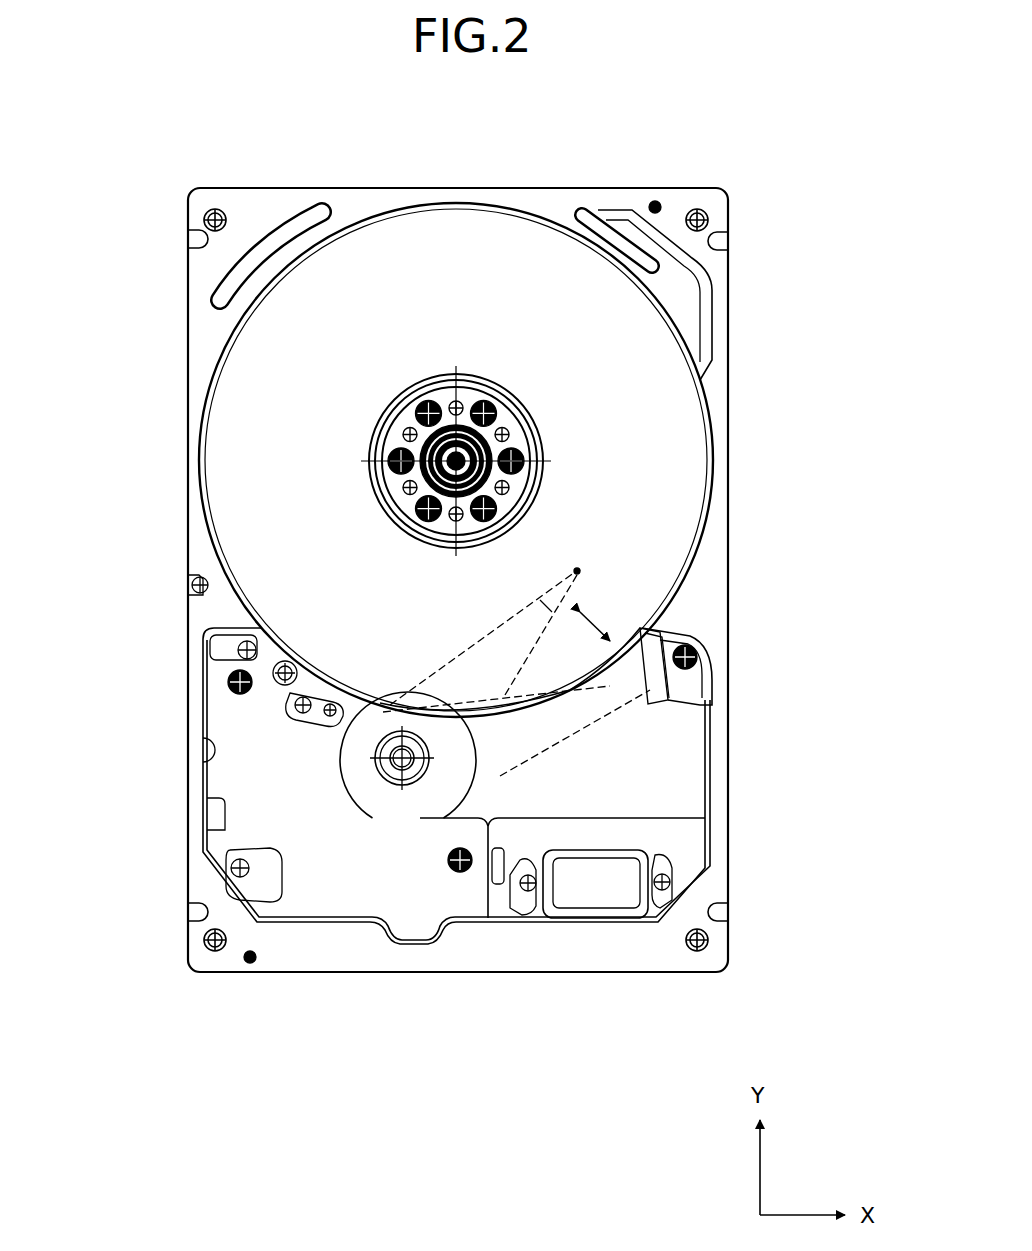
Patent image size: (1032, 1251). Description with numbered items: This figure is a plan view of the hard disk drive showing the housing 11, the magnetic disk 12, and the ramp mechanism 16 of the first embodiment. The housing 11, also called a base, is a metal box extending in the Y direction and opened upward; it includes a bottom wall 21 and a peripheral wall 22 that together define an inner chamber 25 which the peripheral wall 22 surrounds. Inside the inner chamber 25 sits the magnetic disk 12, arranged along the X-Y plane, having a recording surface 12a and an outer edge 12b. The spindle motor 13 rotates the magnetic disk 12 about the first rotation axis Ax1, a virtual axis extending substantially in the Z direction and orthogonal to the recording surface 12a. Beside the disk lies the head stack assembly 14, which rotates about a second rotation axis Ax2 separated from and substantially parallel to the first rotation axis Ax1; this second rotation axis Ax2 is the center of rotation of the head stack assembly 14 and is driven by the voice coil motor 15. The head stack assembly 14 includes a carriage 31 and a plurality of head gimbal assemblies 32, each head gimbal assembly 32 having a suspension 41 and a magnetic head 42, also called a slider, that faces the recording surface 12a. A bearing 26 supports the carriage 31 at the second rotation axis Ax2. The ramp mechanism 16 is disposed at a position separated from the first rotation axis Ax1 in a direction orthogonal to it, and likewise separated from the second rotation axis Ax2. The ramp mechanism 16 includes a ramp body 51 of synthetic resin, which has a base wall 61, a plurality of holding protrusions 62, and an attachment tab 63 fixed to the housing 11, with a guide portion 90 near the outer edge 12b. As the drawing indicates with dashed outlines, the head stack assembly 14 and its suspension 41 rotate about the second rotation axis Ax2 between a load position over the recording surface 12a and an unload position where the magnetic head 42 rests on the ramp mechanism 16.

The housing 11 is at (236, 186).
The magnetic disk 12 is at (456, 418).
The recording surface 12a is at (487, 236).
The outer edge 12b is at (608, 240).
The spindle motor 13 is at (431, 396).
The first rotation axis Ax1 is at (393, 405).
The head stack assembly 14 is at (455, 652).
The voice coil motor 15 is at (313, 906).
The ramp load mechanism 16 is at (760, 652).
The bottom wall 21 is at (497, 806).
The peripheral wall 22 is at (735, 346).
The inner chamber 25 is at (652, 804).
The bearing (pivot) 26 is at (380, 775).
The second rotation axis Ax2 is at (398, 752).
The carriage 31 is at (432, 664).
The head gimbal assembly 32 is at (741, 649).
The suspension 41 is at (654, 666).
The magnetic head 42 is at (577, 572).
The ramp body 51 is at (677, 666).
The base wall 61 is at (677, 666).
The holding protrusion 62 is at (625, 612).
The attachment tab 63 is at (700, 648).
The ramp guide portion 90 is at (706, 694).